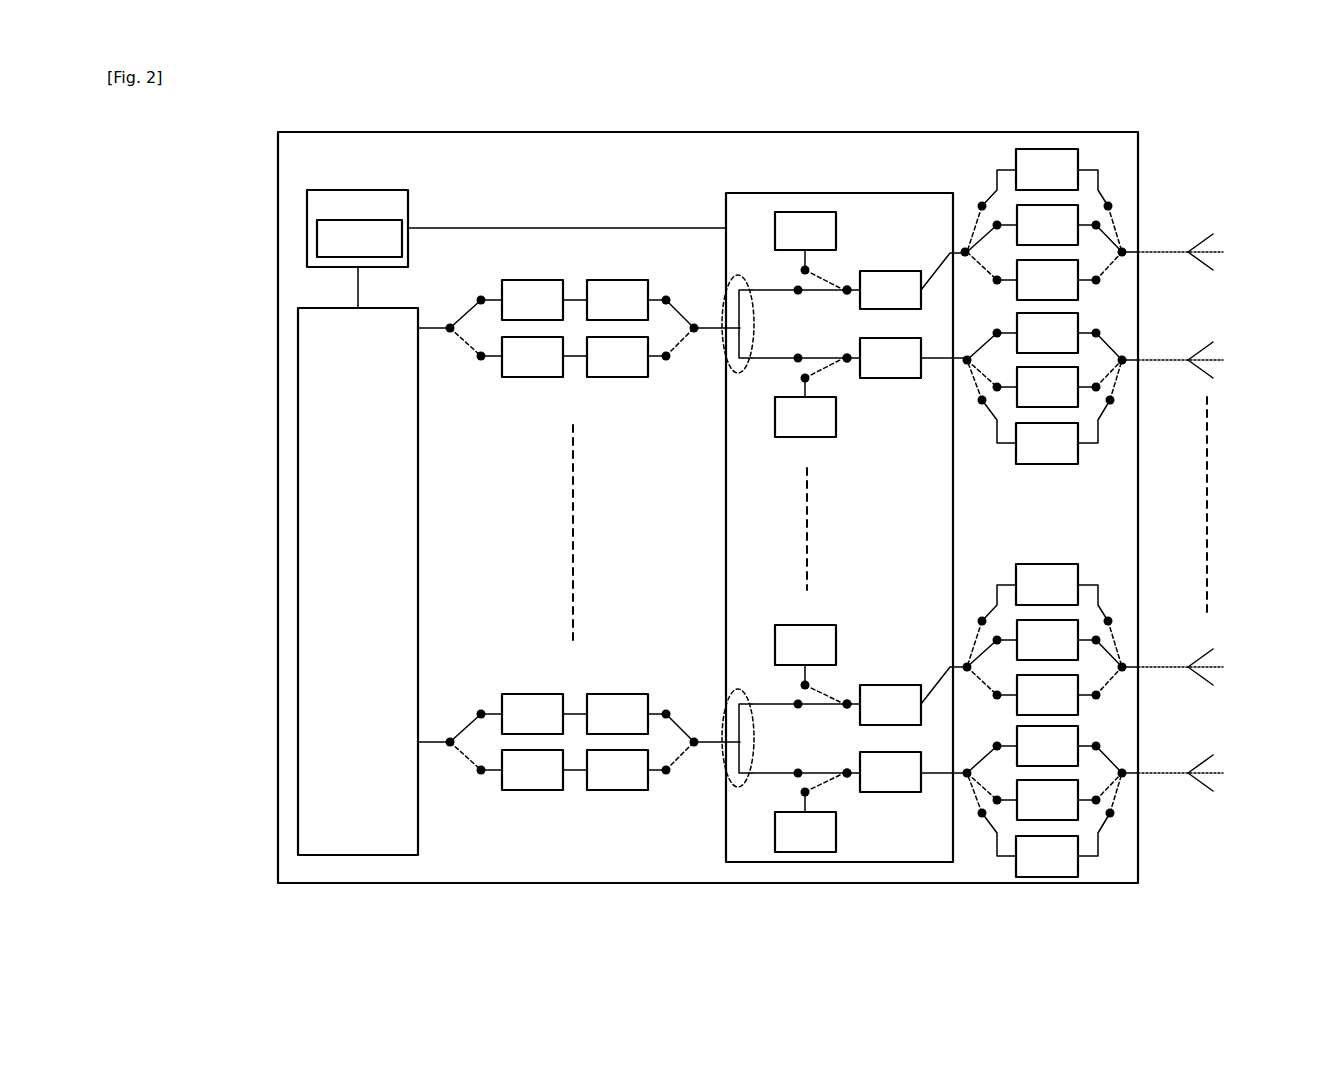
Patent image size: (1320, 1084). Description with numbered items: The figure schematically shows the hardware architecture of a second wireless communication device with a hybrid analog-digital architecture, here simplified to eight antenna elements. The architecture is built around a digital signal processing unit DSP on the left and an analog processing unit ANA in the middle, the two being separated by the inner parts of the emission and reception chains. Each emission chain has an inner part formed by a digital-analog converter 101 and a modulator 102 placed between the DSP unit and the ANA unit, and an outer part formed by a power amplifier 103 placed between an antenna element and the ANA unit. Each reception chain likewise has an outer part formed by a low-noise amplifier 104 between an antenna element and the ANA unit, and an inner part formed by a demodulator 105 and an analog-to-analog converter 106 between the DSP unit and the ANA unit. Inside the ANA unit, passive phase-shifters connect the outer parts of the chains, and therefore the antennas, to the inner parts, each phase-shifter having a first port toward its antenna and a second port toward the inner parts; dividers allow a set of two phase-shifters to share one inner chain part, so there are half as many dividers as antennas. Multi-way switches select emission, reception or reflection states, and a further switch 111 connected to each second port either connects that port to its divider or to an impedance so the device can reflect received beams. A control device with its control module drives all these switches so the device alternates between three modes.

The digital-analog converter 101 is at (532, 507).
The modulator 102 is at (617, 507).
The power amplifier 103 is at (1047, 485).
The low-noise amplifier 104 is at (1047, 540).
The demodulator 105 is at (617, 563).
The analog-to-analog converter 106 is at (532, 563).
The switch 111 is at (825, 285).
The digital signal processing unit DSP is at (418, 533).
The analog processing unit ANA is at (725, 590).